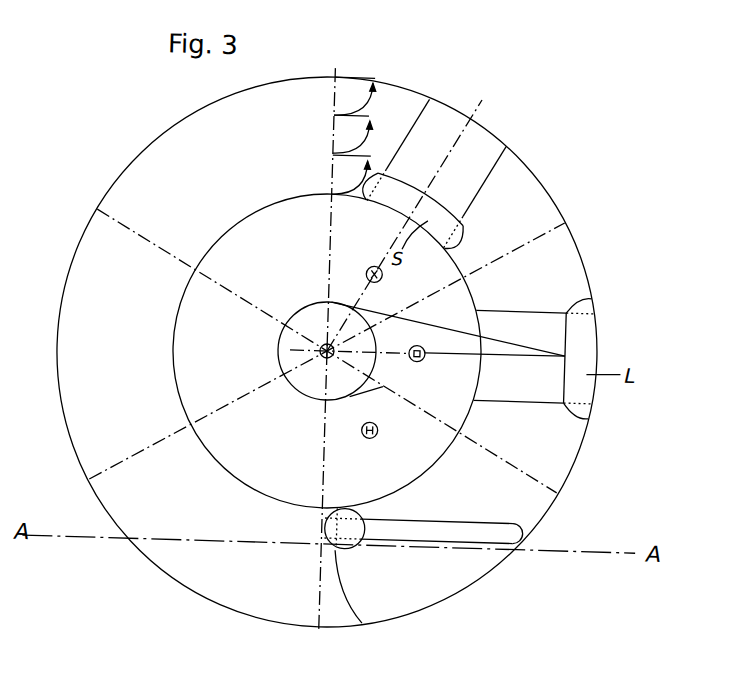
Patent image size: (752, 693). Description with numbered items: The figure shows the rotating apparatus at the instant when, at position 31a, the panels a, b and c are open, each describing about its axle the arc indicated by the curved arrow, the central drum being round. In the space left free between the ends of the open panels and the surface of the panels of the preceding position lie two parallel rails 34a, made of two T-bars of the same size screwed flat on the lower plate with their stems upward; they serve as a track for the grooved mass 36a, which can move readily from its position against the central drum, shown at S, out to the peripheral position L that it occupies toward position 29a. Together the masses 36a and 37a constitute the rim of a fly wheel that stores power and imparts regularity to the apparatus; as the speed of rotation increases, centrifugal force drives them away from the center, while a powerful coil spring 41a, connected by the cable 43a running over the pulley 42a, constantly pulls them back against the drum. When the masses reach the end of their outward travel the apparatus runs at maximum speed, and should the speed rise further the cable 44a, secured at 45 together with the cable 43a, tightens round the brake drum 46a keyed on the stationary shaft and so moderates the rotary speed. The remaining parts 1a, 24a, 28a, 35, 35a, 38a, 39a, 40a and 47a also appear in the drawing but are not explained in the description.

The inner rim of disc 1a is at (219, 241).
The shaft bore 24a is at (324, 340).
The lower axis / disc bottom 28a is at (321, 502).
The position 29a is at (332, 352).
The position 31a is at (344, 200).
The parallel rails 34a is at (476, 250).
The rim 35 is at (423, 241).
The slot edges 35a is at (382, 170).
The grooved mass 36a is at (482, 292).
The mass 37a is at (366, 544).
The lever bar 38a is at (440, 535).
The bar end 39a is at (523, 527).
The curved guide 40a is at (352, 589).
The coil spring 41a is at (423, 352).
The pulley 42a is at (413, 345).
The cable 43a is at (503, 348).
The cable 44a is at (510, 336).
The securing point 45 is at (557, 357).
The brake drum 46a is at (278, 350).
The hub tangent 47a is at (384, 382).